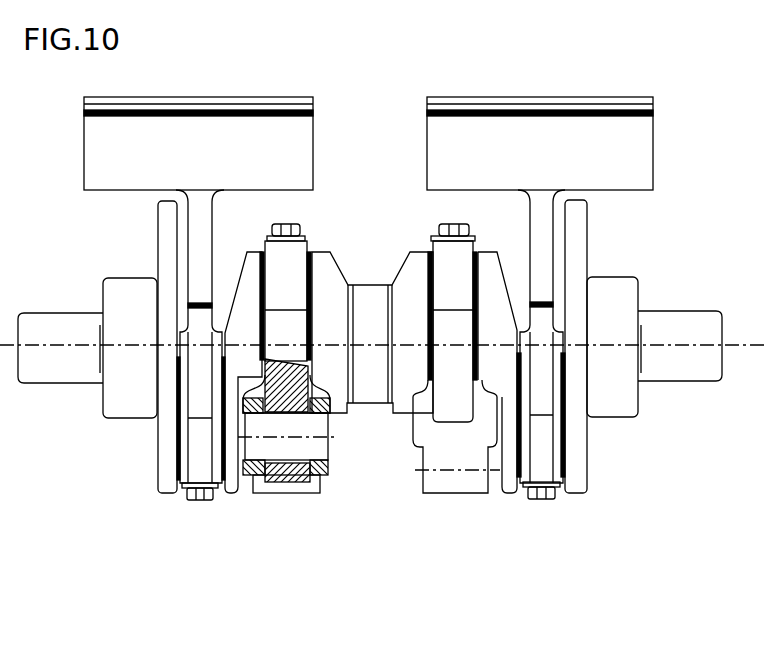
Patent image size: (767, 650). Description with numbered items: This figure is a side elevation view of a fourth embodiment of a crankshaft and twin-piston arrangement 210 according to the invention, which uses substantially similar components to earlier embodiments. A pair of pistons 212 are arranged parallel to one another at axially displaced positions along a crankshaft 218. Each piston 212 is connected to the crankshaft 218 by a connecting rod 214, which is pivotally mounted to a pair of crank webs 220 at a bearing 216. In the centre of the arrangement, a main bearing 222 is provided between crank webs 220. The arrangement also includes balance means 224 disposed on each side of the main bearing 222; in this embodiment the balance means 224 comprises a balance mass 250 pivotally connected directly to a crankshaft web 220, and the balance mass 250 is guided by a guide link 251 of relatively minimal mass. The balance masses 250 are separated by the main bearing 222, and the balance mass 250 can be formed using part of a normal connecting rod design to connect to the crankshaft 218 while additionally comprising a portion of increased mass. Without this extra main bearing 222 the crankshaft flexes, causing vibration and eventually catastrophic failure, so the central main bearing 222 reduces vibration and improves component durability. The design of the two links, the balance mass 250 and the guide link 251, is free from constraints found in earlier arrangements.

The twin-piston arrangement 210 is at (594, 257).
The piston 212 is at (113, 177).
The connecting rod 214 is at (200, 237).
The bearing 216 is at (150, 449).
The crankshaft 218 is at (62, 338).
The crank web 220 is at (403, 285).
The main bearing 222 is at (370, 414).
The balance means 224 is at (403, 527).
The balance mass 250 is at (277, 478).
The guide link 251 is at (418, 440).